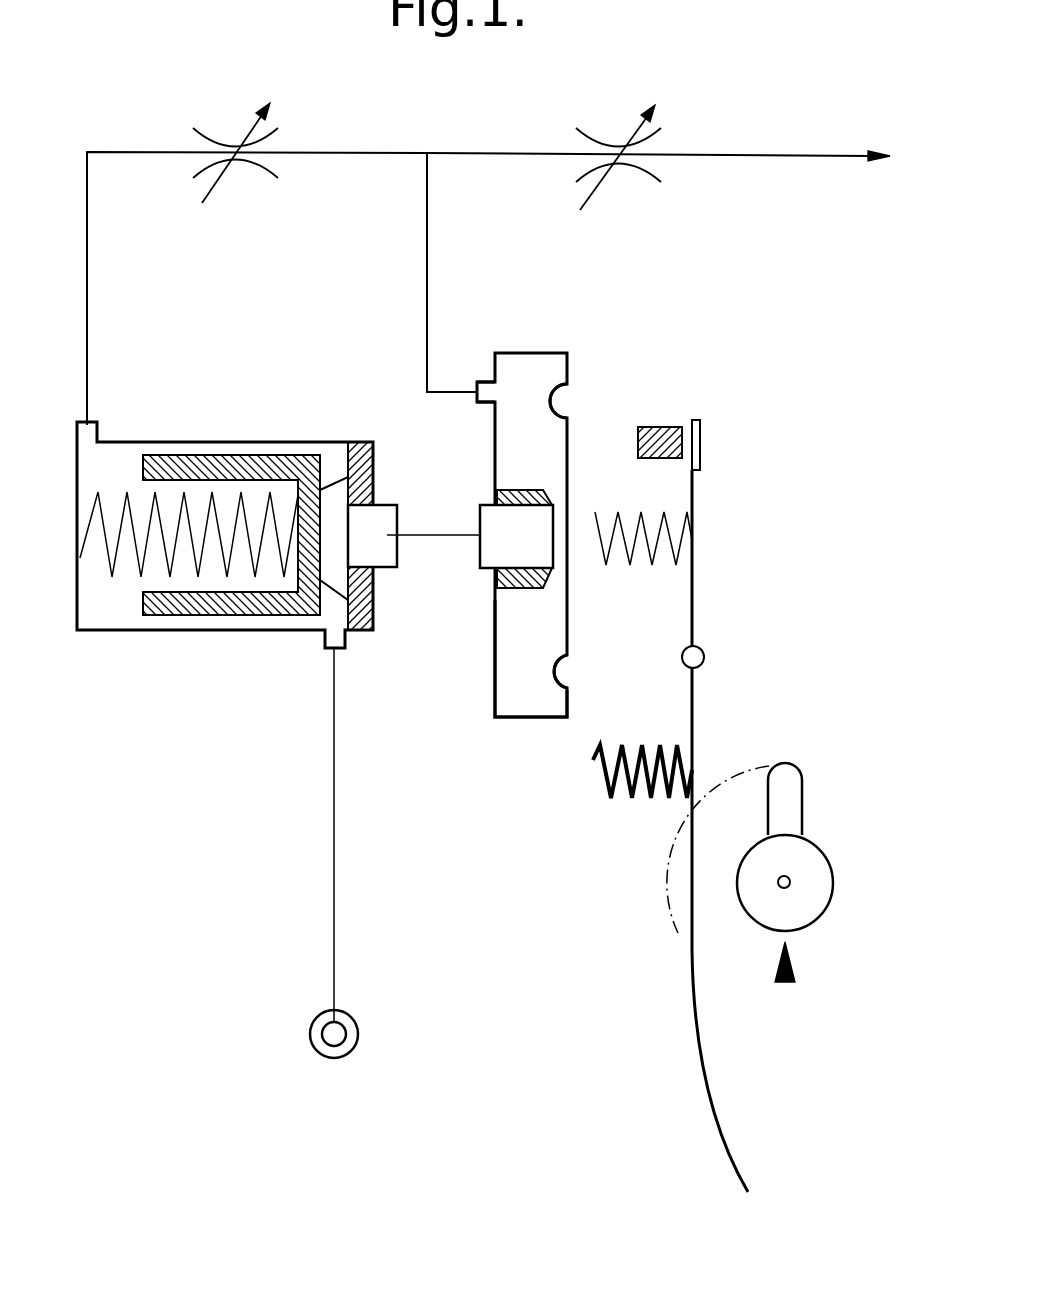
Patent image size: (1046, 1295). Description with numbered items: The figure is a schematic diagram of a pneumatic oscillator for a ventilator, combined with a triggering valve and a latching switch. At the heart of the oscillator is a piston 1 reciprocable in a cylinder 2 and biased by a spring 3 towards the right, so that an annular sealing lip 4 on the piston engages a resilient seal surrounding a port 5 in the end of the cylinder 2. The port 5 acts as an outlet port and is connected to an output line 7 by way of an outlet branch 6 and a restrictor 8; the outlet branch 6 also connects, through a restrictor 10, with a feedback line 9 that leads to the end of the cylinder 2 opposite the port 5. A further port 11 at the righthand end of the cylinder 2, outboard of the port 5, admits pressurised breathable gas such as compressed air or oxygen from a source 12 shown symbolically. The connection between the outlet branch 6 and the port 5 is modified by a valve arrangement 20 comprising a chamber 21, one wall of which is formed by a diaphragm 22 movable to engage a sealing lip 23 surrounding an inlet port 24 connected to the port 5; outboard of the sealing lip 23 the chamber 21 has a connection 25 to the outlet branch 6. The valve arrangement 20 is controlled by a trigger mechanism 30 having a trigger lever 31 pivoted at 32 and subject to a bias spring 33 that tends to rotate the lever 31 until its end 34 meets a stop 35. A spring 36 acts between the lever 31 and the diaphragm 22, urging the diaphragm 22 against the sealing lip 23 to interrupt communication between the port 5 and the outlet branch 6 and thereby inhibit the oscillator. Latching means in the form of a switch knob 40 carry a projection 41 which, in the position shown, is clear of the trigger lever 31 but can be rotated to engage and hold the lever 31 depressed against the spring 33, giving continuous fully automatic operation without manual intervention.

The piston 1 is at (180, 600).
The cylinder 2 is at (213, 440).
The spring 3 is at (82, 512).
The annular sealing lip 4 is at (330, 477).
The port 5 is at (377, 552).
The outlet branch 6 is at (427, 233).
The output line 7 is at (790, 155).
The restrictor 8 is at (593, 140).
The feedback line 9 is at (87, 262).
The restrictor 10 is at (215, 138).
The port 11 is at (323, 637).
The source 12 is at (320, 1022).
The valve arrangement 20 is at (527, 352).
The chamber 21 is at (532, 693).
The diaphragm 22 is at (560, 410).
The sealing lip 23 is at (557, 572).
The inlet port 24 is at (488, 548).
The connection 25 is at (487, 402).
The trigger mechanism 30 is at (640, 1043).
The trigger lever 31 is at (715, 1088).
The pivot 32 is at (698, 653).
The bias spring 33 is at (630, 793).
The end of trigger lever 34 is at (703, 445).
The stop 35 is at (658, 427).
The spring 36 is at (638, 517).
The switch knob 40 is at (813, 905).
The projection 41 is at (787, 777).